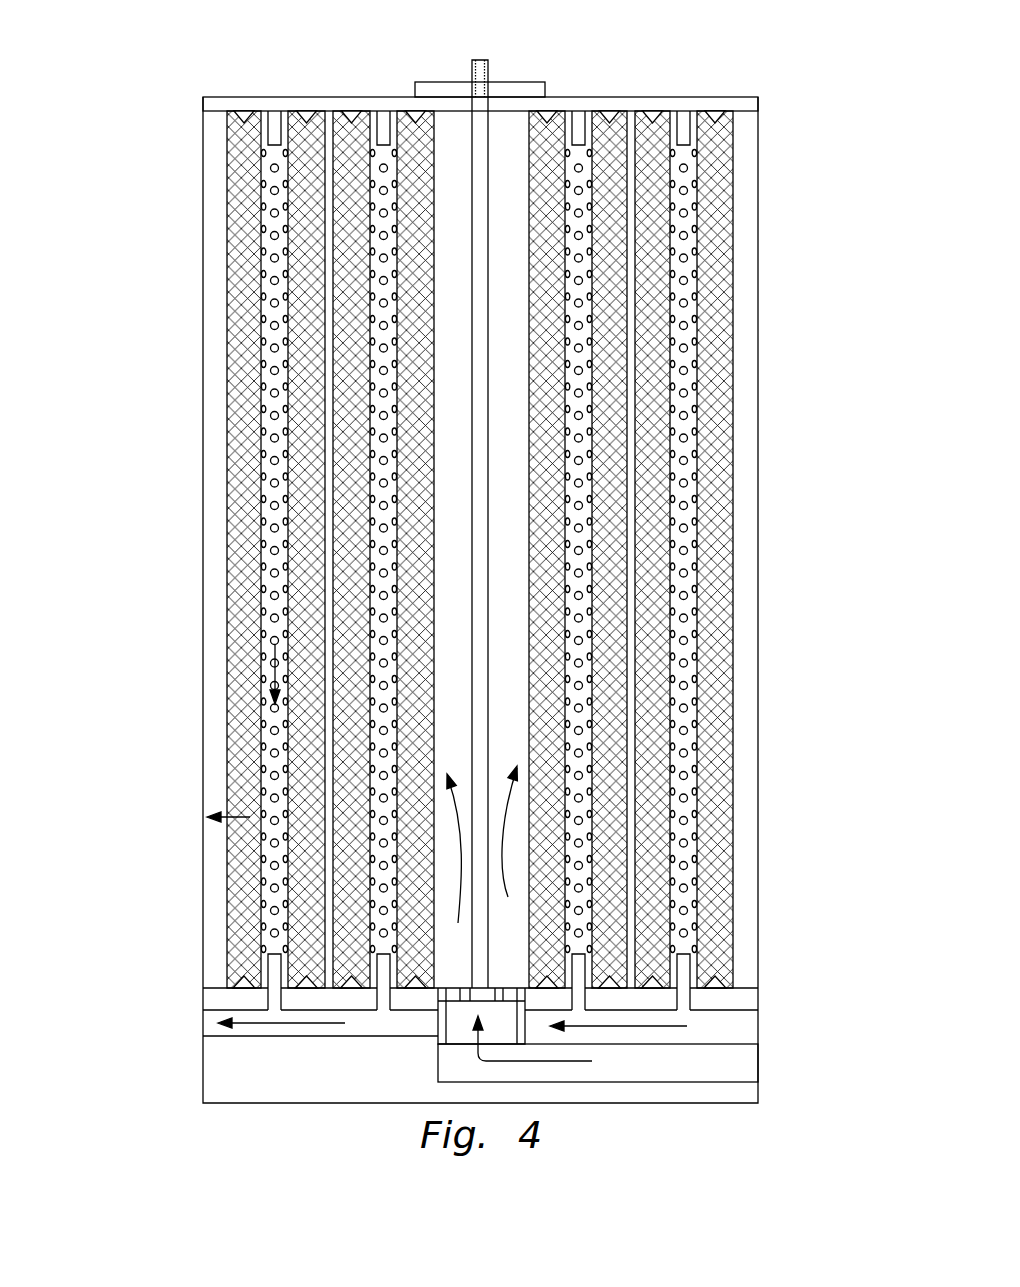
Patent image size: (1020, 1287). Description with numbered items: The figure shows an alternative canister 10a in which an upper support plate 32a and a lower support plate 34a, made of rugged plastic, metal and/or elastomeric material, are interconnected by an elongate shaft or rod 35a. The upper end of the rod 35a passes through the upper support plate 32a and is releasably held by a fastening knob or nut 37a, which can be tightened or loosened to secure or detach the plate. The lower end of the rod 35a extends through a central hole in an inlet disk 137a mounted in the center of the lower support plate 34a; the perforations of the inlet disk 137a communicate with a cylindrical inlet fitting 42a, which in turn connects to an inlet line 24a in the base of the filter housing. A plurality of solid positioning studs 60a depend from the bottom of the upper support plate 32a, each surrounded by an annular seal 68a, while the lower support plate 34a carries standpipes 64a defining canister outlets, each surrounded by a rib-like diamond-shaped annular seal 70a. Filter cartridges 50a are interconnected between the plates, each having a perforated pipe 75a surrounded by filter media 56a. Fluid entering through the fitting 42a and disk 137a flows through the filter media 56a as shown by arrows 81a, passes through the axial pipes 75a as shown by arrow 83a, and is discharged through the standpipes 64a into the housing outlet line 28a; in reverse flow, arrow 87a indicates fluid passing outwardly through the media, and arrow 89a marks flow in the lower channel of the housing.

The canister 10a is at (152, 115).
The annular seal 68a is at (240, 111).
The positioning stud 60a is at (272, 110).
The fastening knob or nut 37a is at (440, 82).
The shaft or rod 35a is at (471, 160).
The upper support plate 32a is at (758, 101).
The filter media 56a is at (247, 288).
The perforated pipe 75a is at (260, 377).
The filter cartridge 50a is at (227, 447).
The arrow 83a is at (273, 648).
The arrow 87a is at (240, 817).
The arrows 81a is at (462, 866).
The inlet disk 137a is at (512, 985).
The lower support plate 34a is at (760, 996).
The annular seal 70a is at (236, 975).
The standpipe 64a is at (270, 996).
The outlet line 28a is at (290, 1037).
The inlet fitting 42a is at (437, 1023).
The right outlet channel flow 89a is at (647, 1026).
The inlet line 24a is at (623, 1080).